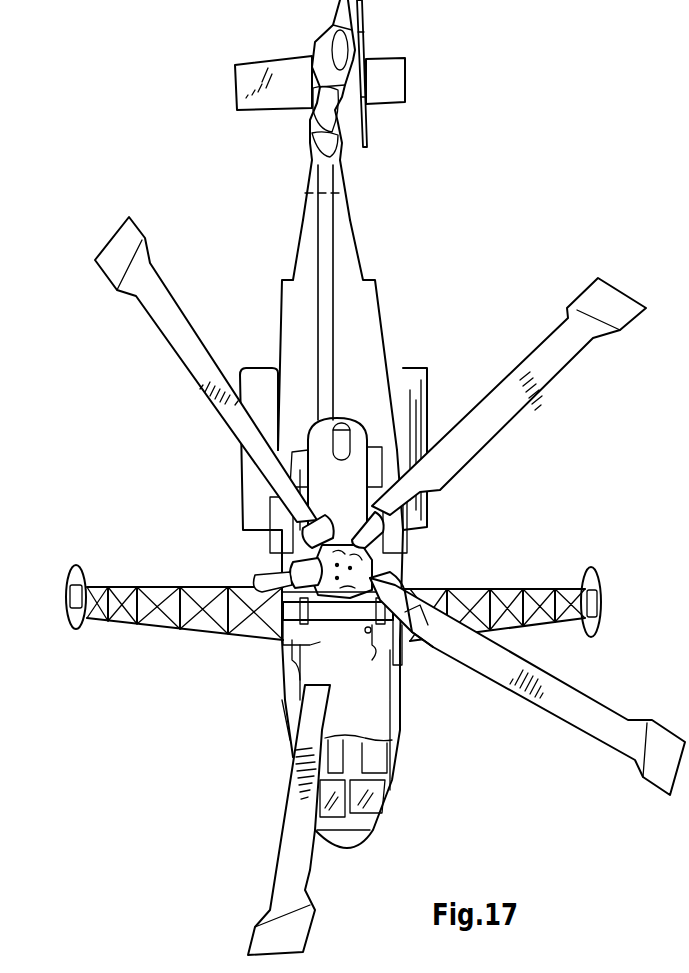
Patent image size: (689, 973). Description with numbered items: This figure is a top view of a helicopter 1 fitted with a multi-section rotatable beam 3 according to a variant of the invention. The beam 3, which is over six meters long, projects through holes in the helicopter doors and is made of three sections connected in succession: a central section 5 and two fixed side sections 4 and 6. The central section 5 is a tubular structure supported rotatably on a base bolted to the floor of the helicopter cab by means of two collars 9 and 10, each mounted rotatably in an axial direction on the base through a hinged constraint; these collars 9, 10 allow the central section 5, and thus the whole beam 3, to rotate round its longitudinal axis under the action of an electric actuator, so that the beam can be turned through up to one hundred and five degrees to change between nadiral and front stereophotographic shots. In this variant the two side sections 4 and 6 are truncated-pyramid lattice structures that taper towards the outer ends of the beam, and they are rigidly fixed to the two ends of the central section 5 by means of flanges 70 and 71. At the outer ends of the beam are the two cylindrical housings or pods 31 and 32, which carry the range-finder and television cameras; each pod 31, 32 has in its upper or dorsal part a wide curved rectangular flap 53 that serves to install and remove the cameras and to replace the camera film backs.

The helicopter 1 is at (392, 723).
The projecting beam 3 is at (340, 595).
The side section 4 is at (470, 589).
The central section 5 is at (338, 615).
The side section 6 is at (182, 587).
The collar 9 is at (370, 638).
The collar 10 is at (308, 648).
The cylindrical housing or pod 31 is at (597, 578).
The cylindrical housing or pod 32 is at (72, 580).
The curved rectangular flap 53 is at (72, 612).
The flange 70 is at (412, 643).
The flange 71 is at (258, 584).